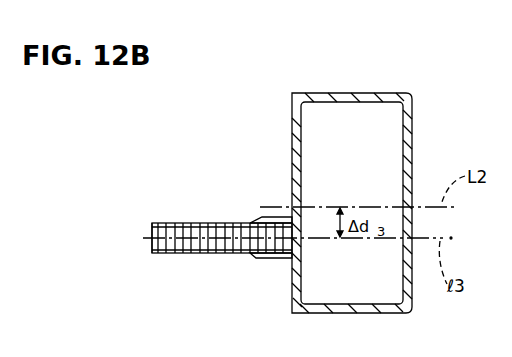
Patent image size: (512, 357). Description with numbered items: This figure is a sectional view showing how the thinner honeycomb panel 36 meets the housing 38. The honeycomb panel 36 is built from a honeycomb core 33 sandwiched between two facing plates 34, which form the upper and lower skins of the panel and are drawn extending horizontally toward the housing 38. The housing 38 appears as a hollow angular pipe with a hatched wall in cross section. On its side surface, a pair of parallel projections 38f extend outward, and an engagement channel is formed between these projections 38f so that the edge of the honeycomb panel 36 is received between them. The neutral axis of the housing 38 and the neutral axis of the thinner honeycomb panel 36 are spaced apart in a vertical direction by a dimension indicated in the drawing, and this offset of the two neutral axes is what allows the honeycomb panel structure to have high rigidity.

The honeycomb core 33 is at (153, 240).
The facing plates 34 is at (190, 222).
The thinner honeycomb panel 36 is at (214, 254).
The housing 38 is at (412, 138).
The parallel projections 38f is at (250, 222).